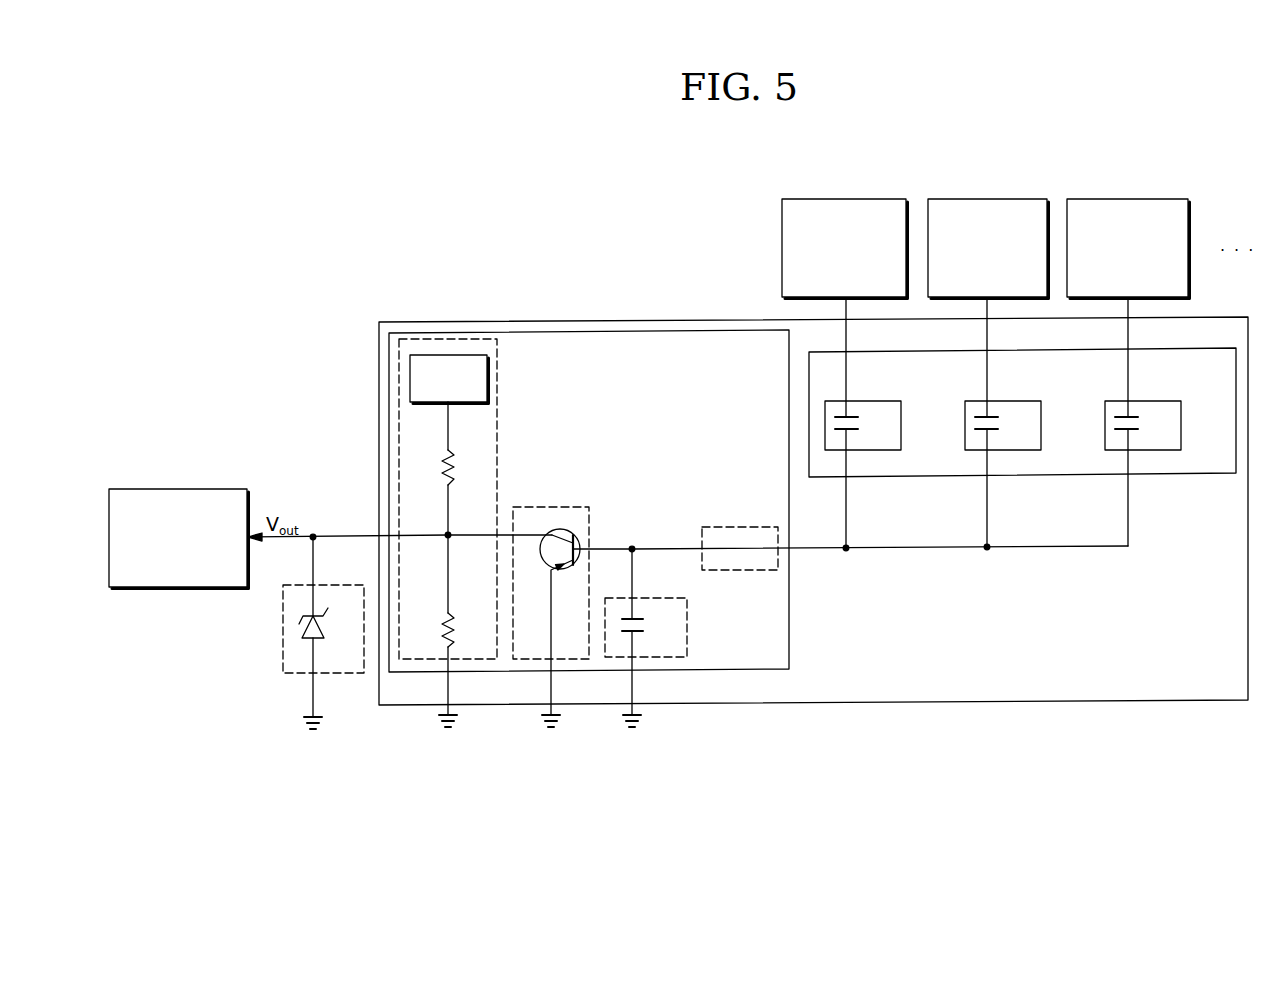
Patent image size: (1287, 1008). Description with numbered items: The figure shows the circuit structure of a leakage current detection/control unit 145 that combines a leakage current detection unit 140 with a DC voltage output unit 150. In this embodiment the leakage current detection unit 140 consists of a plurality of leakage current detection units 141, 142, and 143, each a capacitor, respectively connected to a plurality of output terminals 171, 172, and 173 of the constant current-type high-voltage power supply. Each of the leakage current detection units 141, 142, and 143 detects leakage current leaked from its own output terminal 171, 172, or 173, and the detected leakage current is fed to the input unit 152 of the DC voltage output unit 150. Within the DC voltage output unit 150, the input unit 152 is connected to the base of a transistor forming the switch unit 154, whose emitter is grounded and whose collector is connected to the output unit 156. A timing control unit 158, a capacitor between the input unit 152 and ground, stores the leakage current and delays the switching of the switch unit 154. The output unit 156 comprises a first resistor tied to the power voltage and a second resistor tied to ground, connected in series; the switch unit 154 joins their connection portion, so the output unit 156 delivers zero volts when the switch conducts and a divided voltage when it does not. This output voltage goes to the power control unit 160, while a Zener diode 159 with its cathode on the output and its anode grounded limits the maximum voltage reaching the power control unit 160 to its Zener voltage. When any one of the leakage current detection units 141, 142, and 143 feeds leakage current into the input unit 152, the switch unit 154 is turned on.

The leakage current detection unit 140 is at (1202, 477).
The leakage current detection unit 141 is at (860, 402).
The leakage current detection unit 142 is at (1000, 402).
The leakage current detection unit 143 is at (1141, 402).
The leakage current detection/control unit 145 is at (573, 321).
The DC voltage output unit 150 is at (789, 614).
The input unit 152 is at (730, 525).
The switch unit 154 is at (557, 507).
The output unit 156 is at (497, 360).
The timing control unit 158 is at (643, 598).
The Zener diode 159 is at (327, 585).
The power control unit 160 is at (182, 485).
The output terminal 171 is at (860, 195).
The output terminal 172 is at (1000, 195).
The output terminal 173 is at (1140, 195).